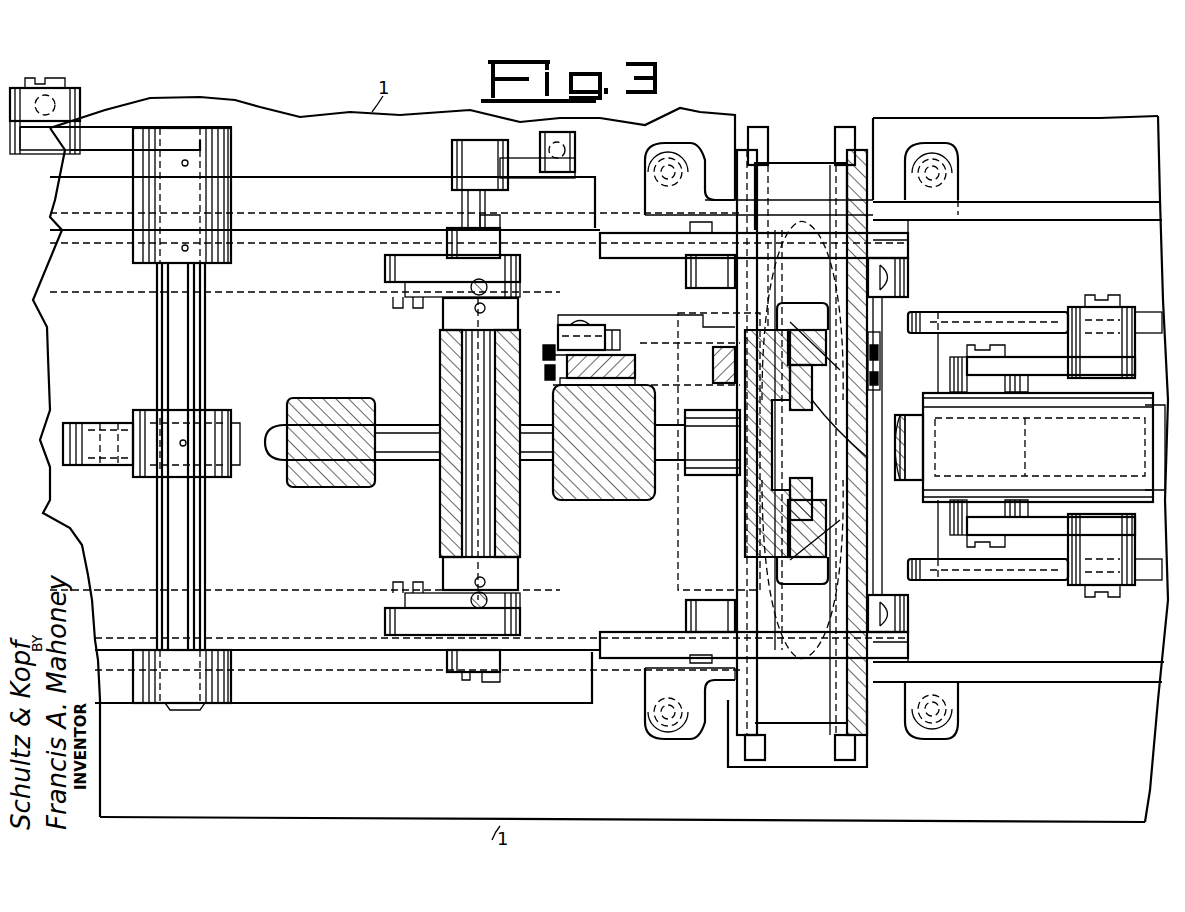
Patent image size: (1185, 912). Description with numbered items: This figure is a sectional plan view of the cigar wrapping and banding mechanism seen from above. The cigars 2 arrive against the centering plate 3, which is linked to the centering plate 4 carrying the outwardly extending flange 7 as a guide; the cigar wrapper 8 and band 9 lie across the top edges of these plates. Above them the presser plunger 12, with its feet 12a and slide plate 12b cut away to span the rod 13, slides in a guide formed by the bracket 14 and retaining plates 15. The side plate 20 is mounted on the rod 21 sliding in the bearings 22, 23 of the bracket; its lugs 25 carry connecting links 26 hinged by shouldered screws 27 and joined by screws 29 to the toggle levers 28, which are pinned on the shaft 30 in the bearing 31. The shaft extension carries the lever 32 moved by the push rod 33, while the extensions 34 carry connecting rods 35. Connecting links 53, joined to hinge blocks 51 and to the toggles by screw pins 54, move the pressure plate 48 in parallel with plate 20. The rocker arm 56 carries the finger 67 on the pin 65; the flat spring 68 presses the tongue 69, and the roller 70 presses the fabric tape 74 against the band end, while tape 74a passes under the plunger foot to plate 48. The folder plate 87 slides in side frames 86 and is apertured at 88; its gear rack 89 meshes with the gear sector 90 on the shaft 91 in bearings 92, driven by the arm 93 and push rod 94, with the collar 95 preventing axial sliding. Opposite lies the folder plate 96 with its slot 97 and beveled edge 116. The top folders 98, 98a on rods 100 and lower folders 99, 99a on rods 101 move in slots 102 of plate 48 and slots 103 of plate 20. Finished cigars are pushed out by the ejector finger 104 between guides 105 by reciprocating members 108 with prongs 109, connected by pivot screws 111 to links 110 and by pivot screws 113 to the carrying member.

The cigars 2 is at (775, 262).
The centering plate 3 is at (845, 127).
The centering plate 4 is at (762, 127).
The outwardly extending flange 7 is at (678, 546).
The cigar wrapper 8 is at (800, 163).
The band 9 is at (828, 335).
The plunger 12 is at (815, 500).
The plunger foot 12a is at (851, 435).
The slide plate 12b is at (800, 400).
The rod 13 is at (915, 482).
The bracket 14 is at (750, 530).
The retaining plates 15 is at (812, 375).
The plate 20 is at (740, 502).
The rod 21 is at (415, 462).
The bearing 22 is at (608, 500).
The bearing 23 is at (330, 488).
The lugs 25 is at (686, 270).
The connecting links 26 is at (447, 240).
The shouldered screws 27 is at (702, 222).
The toggle levers 28 is at (505, 290).
The shouldered screws 29 is at (462, 228).
The shaft 30 is at (470, 500).
The bearing 31 is at (440, 535).
The lever 32 is at (522, 150).
The push rod 33 is at (575, 150).
The extensions 34 is at (385, 265).
The connecting rods 35 is at (430, 300).
The plate 48 is at (862, 150).
The hinge blocks 51 is at (908, 272).
The connecting links 53 is at (908, 250).
The screw pins 54 is at (495, 222).
The rocker arm 56 is at (565, 380).
The pin 65 is at (592, 320).
The finger 67 is at (645, 340).
The flat spring 68 is at (635, 368).
The tongue 69 is at (612, 330).
The roller 70 is at (722, 356).
The fabric tape 74 is at (548, 365).
The fabric tape 74a is at (880, 372).
The side frames 86 is at (345, 185).
The folder plate 87 is at (85, 515).
The aperture 88 is at (575, 320).
The gear rack 89 is at (70, 425).
The gear sector 90 is at (105, 425).
The shaft 91 is at (160, 340).
The bearings 92 is at (232, 192).
The arm 93 is at (122, 130).
The push rod 94 is at (78, 100).
The collar 95 is at (232, 262).
The folder plate 96 is at (1020, 680).
The slot 97 is at (885, 398).
The top folder 98 is at (645, 700).
The top folder 98a is at (648, 215).
The lower folder 99 is at (955, 695).
The lower folder 99a is at (955, 200).
The rods 100 is at (674, 165).
The rods 101 is at (940, 170).
The slots 102 is at (850, 195).
The slots 103 is at (740, 200).
The ejector finger 104 is at (1025, 447).
The guides 105 is at (1065, 208).
The reciprocating members 108 is at (992, 312).
The prongs 109 is at (940, 318).
The links 110 is at (1040, 358).
The pivot screws 111 is at (1108, 300).
The pivot screws 113 is at (1000, 345).
The beveled edge 116 is at (940, 337).